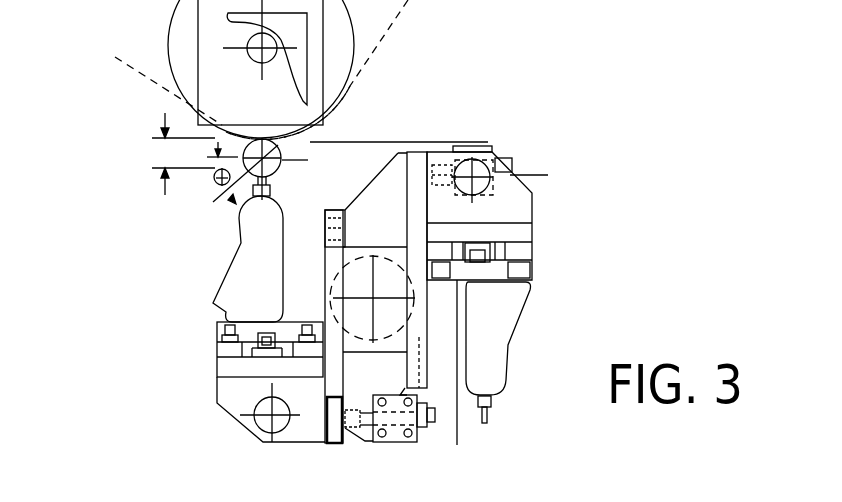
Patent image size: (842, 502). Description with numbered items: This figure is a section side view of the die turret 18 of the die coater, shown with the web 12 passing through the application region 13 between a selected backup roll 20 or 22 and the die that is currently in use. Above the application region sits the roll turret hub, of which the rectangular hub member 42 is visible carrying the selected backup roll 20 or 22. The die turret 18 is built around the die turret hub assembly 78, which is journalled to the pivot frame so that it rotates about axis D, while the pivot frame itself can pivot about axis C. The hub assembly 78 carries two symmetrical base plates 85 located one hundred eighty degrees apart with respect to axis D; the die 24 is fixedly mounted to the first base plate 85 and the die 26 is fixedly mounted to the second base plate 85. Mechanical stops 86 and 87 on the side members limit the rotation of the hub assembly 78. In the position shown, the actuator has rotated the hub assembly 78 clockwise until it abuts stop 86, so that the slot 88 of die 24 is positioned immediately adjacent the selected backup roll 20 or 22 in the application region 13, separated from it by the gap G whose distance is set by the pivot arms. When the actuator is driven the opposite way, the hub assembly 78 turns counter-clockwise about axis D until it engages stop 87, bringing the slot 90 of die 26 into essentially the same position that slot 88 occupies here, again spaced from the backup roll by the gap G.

The web 12 is at (410, 4).
The application region 13 is at (150, 157).
The die turret 18 is at (176, 372).
The backup roll 20 is at (352, 28).
The backup roll 22 is at (288, 112).
The die 24 is at (218, 292).
The die 26 is at (507, 338).
The hub member 42 is at (223, 47).
The die turret hub assembly 78 is at (303, 430).
The base plate 85 is at (297, 320).
The mechanical stop 86 is at (488, 145).
The mechanical stop 87 is at (405, 447).
The slot 88 is at (279, 163).
The slot 90 is at (513, 426).
The axis C is at (281, 152).
The axis D is at (373, 298).
The gap G is at (167, 154).